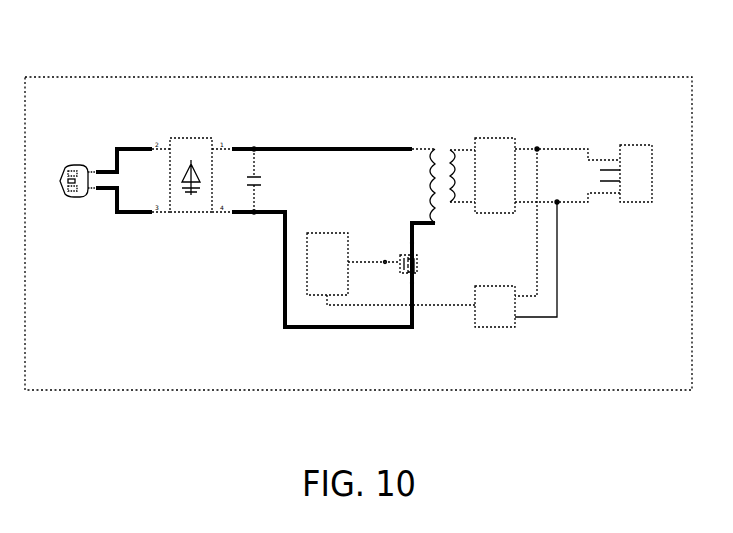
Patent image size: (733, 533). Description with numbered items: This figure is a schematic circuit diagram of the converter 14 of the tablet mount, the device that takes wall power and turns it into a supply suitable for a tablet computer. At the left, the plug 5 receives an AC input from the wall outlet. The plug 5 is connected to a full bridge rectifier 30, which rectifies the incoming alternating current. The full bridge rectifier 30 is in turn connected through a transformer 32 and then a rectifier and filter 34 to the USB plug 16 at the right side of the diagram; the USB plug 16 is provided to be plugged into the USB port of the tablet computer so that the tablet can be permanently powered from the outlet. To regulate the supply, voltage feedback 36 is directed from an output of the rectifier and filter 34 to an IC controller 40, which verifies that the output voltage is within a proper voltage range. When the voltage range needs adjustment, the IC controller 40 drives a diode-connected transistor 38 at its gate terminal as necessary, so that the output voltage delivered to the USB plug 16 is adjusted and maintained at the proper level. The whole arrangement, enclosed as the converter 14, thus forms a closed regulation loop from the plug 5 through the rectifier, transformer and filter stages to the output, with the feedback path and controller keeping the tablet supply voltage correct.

The converter 14 is at (360, 69).
The plug 5 is at (61, 182).
The full bridge rectifier 30 is at (187, 138).
The transformer 32 is at (440, 148).
The rectifier and filter 34 is at (510, 143).
The USB plug 16 is at (607, 142).
The IC controller 40 is at (312, 281).
The diode-connected transistor 38 is at (427, 268).
The voltage feedback 36 is at (497, 327).